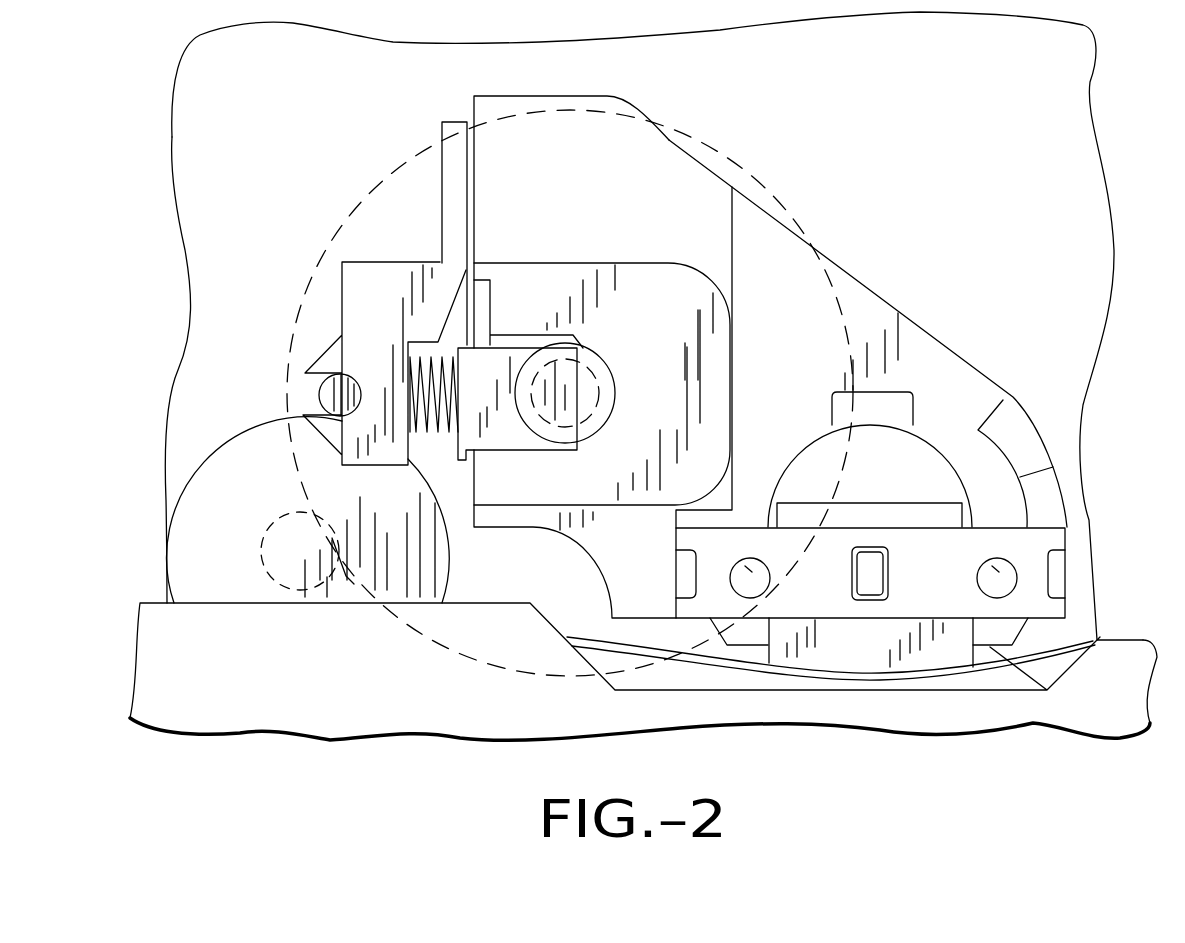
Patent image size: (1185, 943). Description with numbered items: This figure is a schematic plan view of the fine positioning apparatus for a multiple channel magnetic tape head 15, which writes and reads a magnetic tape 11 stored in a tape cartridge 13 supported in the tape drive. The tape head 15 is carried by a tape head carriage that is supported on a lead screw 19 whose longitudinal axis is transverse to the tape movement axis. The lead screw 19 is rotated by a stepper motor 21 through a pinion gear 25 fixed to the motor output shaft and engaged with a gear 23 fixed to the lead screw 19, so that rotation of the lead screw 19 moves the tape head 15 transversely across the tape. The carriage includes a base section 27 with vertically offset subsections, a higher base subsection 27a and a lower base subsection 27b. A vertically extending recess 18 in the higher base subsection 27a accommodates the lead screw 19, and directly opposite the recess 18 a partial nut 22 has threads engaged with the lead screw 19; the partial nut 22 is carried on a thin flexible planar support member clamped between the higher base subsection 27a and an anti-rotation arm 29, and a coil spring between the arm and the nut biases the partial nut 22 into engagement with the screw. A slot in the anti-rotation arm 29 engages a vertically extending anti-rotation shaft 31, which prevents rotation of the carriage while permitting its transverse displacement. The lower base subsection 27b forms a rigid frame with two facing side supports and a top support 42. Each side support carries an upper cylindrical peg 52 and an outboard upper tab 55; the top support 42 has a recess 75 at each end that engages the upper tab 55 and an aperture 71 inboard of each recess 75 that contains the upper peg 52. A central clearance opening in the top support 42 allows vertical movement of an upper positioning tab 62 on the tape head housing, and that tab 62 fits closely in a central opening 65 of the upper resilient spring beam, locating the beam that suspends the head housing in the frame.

The magnetic tape 11 is at (738, 653).
The tape cartridge 13 is at (153, 627).
The multiple channel magnetic tape head 15 is at (862, 644).
The vertically extending recess 18 is at (588, 355).
The lead screw 19 is at (568, 396).
The stepper motor 21 is at (240, 452).
The partial nut 22 is at (483, 412).
The gear 23 is at (400, 165).
The pinion gear 25 is at (280, 525).
The base section 27 is at (476, 176).
The higher base subsection 27a is at (660, 158).
The lower base subsection 27b is at (1037, 687).
The anti-rotation arm 29 is at (352, 292).
The anti-rotation shaft 31 is at (320, 393).
The top support 42 is at (877, 529).
The upper cylindrical peg 52 is at (742, 583).
The upper tab 55 is at (680, 562).
The upper positioning tab 62 is at (866, 596).
The central opening 65 is at (870, 593).
The aperture 71 is at (738, 566).
The recess 75 is at (677, 600).